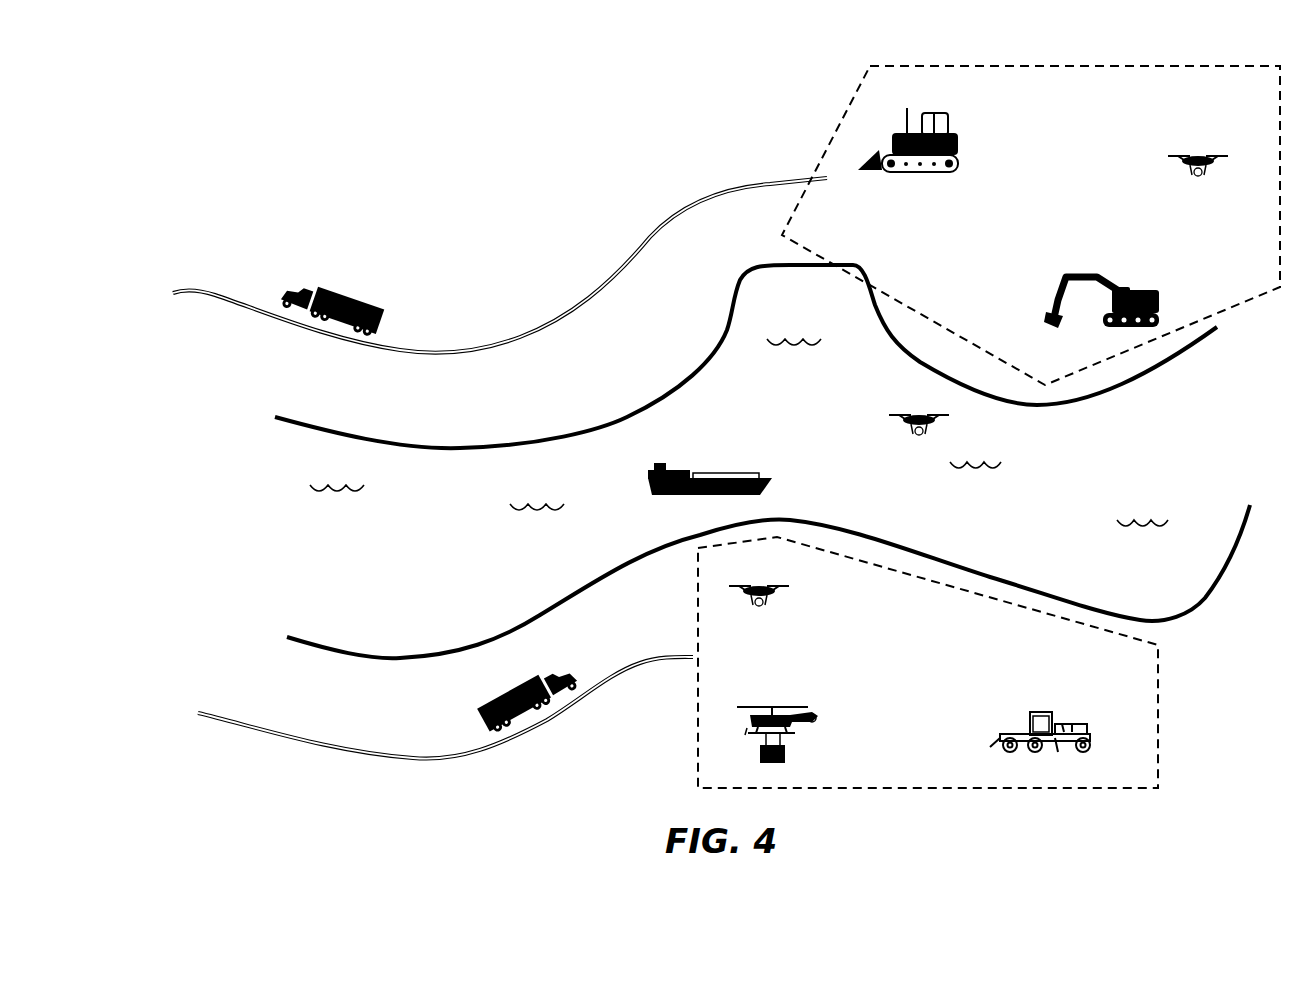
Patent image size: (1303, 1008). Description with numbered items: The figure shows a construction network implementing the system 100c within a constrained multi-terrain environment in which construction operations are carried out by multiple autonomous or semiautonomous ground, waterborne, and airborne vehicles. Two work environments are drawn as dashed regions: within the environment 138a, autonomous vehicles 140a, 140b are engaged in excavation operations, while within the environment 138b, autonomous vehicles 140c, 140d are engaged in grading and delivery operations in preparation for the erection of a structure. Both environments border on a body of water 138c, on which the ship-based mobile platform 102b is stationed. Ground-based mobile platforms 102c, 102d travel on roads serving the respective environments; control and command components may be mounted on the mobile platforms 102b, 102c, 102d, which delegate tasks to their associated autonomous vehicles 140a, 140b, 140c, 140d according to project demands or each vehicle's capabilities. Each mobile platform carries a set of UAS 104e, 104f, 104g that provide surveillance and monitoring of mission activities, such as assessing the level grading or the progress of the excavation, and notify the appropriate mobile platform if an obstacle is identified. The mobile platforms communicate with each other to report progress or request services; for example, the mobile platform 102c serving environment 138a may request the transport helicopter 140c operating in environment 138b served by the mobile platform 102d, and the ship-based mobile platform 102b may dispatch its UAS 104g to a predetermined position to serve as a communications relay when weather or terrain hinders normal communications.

The system 100c is at (182, 114).
The ship-based mobile platform 102b is at (767, 477).
The mobile platform 102c is at (383, 318).
The mobile platform 102d is at (597, 647).
The UAS 104e is at (1180, 150).
The UAS 104f is at (765, 608).
The UAS 104g is at (918, 415).
The environment 138a is at (850, 108).
The environment 138b is at (1158, 718).
The body of water 138c is at (410, 587).
The autonomous vehicle 140a is at (920, 170).
The autonomous vehicle 140b is at (1143, 282).
The transport helicopter 140c is at (777, 707).
The autonomous vehicle 140d is at (1042, 712).